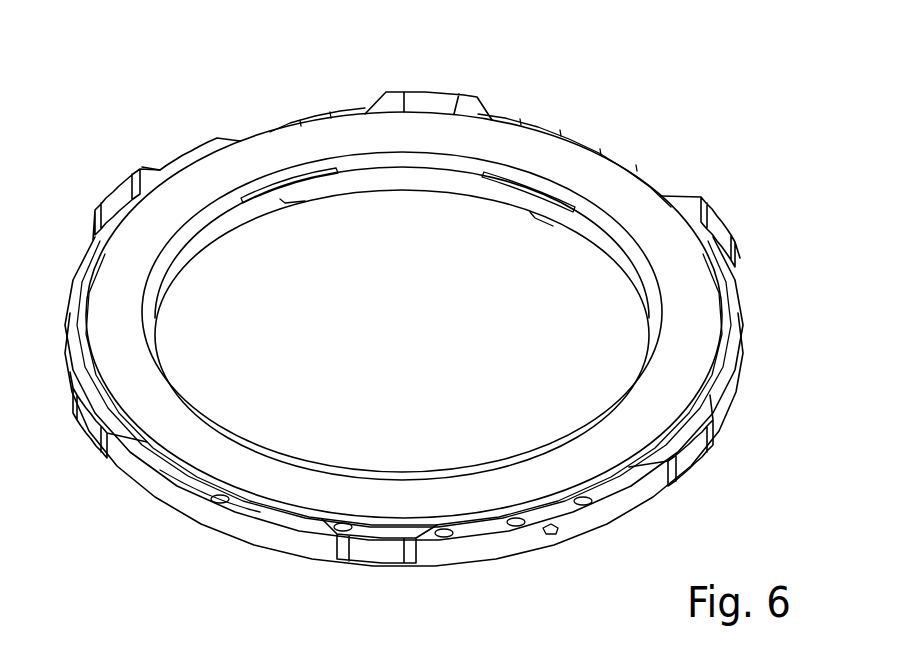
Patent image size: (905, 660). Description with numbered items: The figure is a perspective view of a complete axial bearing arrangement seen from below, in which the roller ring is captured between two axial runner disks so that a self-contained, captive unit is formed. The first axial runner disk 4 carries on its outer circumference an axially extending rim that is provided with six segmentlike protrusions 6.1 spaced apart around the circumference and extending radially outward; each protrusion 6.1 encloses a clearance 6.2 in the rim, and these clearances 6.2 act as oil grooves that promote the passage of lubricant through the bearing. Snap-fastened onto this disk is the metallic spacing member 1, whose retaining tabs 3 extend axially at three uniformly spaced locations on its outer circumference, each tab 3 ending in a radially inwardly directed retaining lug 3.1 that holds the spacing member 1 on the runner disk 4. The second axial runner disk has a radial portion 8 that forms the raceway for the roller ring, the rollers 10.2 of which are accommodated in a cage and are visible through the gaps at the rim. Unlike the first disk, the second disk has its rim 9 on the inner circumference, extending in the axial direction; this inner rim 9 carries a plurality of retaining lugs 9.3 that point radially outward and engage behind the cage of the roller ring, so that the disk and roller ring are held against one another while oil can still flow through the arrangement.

The spacing member 1 is at (507, 567).
The retaining tab 3 is at (617, 508).
The retaining lug 3.1 is at (553, 530).
The axial runner disk 4 is at (515, 115).
The segmentlike protrusion 6.1 is at (115, 182).
The clearance 6.2 is at (248, 133).
The radial portion 8 is at (307, 483).
The rim 9 is at (412, 177).
The retaining lug 9.3 is at (303, 202).
The roller 10.2 is at (337, 532).